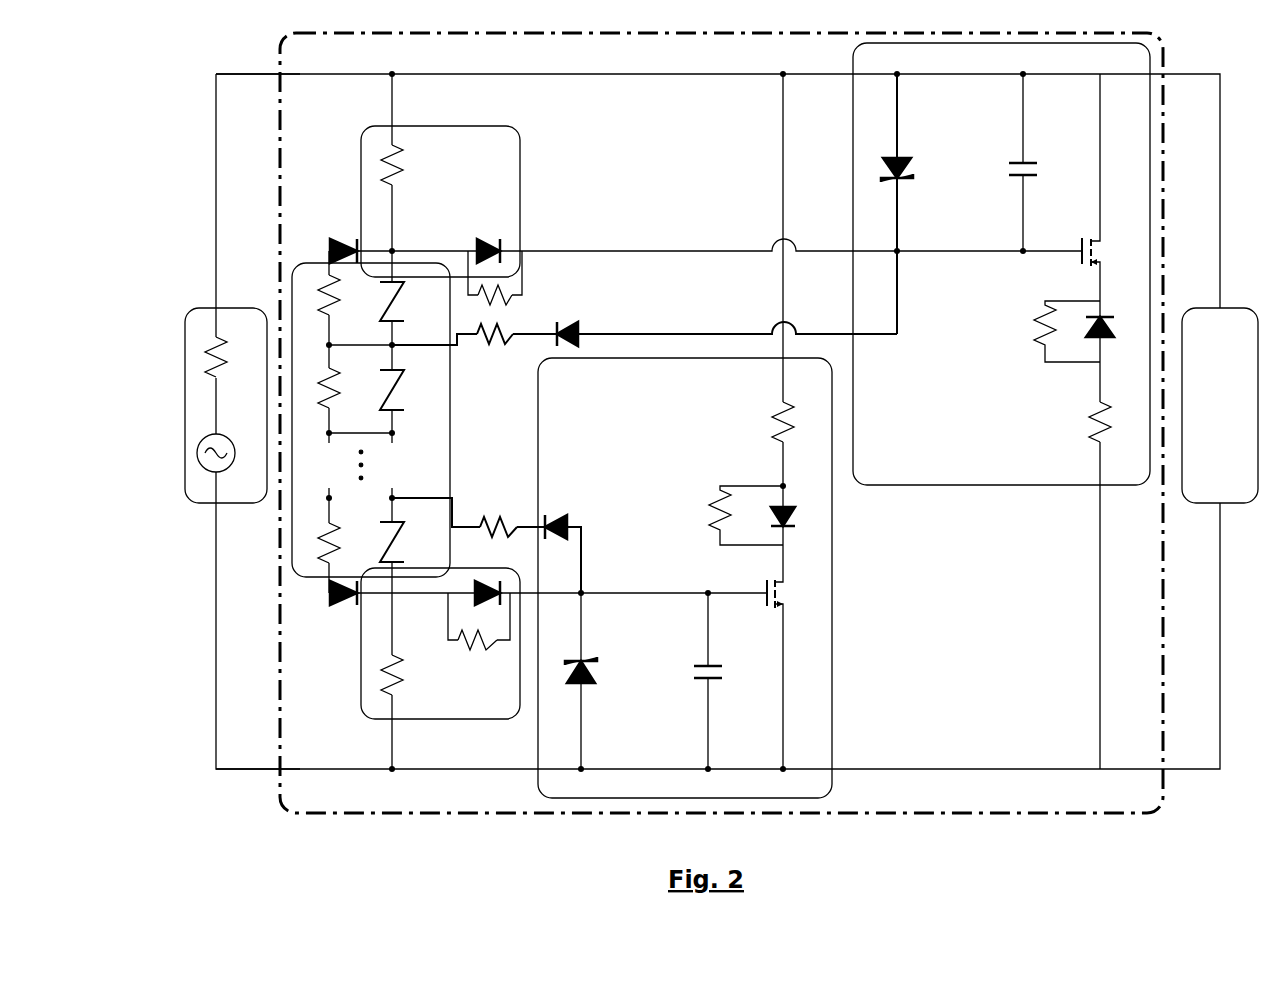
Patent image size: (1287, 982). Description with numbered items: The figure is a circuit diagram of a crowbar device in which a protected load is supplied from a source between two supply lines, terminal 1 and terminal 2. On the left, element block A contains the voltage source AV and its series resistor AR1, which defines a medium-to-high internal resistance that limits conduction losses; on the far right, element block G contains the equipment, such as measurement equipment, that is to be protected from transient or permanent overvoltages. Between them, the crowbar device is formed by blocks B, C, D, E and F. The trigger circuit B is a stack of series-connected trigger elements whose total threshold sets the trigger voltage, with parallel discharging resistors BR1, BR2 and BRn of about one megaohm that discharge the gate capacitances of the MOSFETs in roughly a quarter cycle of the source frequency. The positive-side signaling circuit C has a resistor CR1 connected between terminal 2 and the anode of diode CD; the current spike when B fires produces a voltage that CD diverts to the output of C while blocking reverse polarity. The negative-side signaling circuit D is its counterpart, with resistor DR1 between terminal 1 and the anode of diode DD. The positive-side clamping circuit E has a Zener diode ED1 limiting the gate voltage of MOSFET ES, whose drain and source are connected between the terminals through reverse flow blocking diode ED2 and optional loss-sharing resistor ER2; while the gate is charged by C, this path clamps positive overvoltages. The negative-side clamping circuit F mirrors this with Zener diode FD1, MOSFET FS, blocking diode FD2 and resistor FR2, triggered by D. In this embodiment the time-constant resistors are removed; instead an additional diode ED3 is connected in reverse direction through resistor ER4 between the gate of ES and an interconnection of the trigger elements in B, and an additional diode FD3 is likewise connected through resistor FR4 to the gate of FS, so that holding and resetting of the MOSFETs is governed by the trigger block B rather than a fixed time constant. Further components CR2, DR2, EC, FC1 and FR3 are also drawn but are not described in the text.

The terminal 1 is at (213, 76).
The terminal 2 is at (212, 772).
The element block (voltage source block) A is at (202, 480).
The series resistor AR1 is at (200, 362).
The voltage source AV is at (197, 453).
The trigger circuit (element block B) B is at (312, 564).
The parallel resistor (discharging resistor) BR1 is at (328, 308).
The parallel resistor (discharging resistor) BR2 is at (325, 400).
The parallel resistor (discharging resistor) BRn is at (320, 540).
The positive-side signaling circuit (element block C) C is at (470, 704).
The diode CD is at (475, 604).
The resistor CR1 is at (374, 689).
The resistor CR2 is at (463, 656).
The negative-side signaling circuit (element block D) D is at (492, 160).
The diode DD is at (506, 246).
The resistor DR1 is at (385, 174).
The resistor DR2 is at (515, 292).
The positive-side overvoltage clamping circuit (element block E) E is at (617, 394).
The resistor ER2 is at (768, 423).
The resistor ER4 is at (483, 517).
The Zener diode ED1 is at (584, 692).
The reverse flow blocking diode ED2 is at (770, 526).
The additional diode ED3 is at (562, 525).
The capacitor EC is at (712, 680).
The MOSFET ES is at (789, 598).
The negative-side overvoltage clamping circuit (element block F) F is at (919, 426).
The Zener diode FD1 is at (882, 168).
The reverse flow blocking diode FD2 is at (1084, 337).
The additional diode FD3 is at (578, 332).
The capacitor FC1 is at (1022, 177).
The MOSFET FS is at (1076, 260).
The resistor FR2 is at (712, 506).
The resistor FR3 is at (1034, 331).
The resistor FR4 is at (493, 352).
The element block (equipment block) G is at (1220, 405).